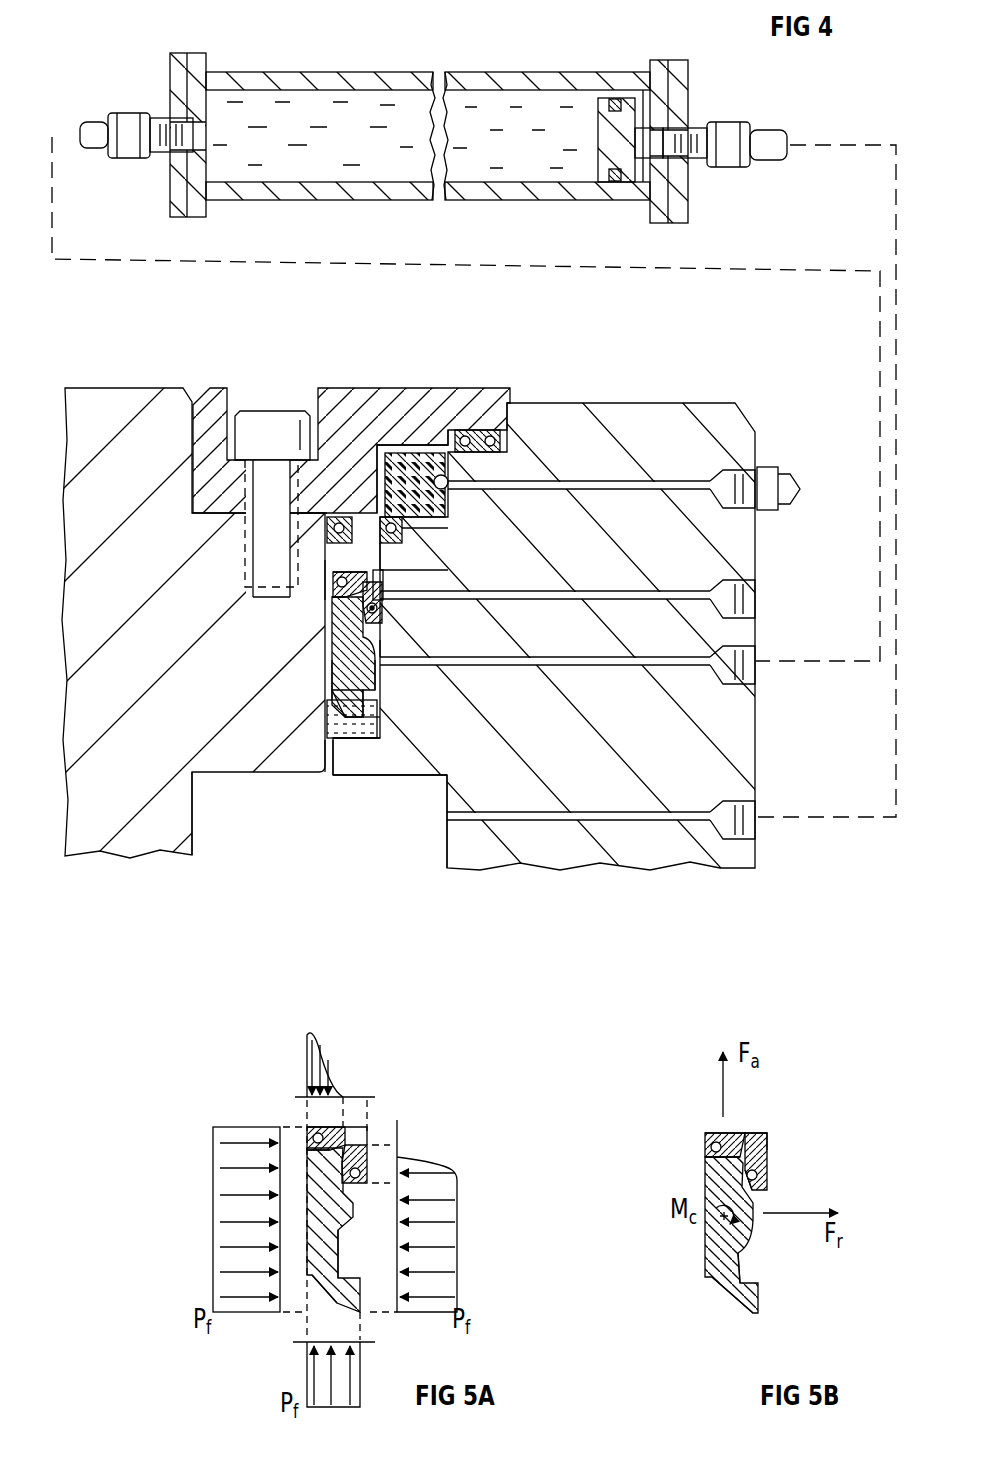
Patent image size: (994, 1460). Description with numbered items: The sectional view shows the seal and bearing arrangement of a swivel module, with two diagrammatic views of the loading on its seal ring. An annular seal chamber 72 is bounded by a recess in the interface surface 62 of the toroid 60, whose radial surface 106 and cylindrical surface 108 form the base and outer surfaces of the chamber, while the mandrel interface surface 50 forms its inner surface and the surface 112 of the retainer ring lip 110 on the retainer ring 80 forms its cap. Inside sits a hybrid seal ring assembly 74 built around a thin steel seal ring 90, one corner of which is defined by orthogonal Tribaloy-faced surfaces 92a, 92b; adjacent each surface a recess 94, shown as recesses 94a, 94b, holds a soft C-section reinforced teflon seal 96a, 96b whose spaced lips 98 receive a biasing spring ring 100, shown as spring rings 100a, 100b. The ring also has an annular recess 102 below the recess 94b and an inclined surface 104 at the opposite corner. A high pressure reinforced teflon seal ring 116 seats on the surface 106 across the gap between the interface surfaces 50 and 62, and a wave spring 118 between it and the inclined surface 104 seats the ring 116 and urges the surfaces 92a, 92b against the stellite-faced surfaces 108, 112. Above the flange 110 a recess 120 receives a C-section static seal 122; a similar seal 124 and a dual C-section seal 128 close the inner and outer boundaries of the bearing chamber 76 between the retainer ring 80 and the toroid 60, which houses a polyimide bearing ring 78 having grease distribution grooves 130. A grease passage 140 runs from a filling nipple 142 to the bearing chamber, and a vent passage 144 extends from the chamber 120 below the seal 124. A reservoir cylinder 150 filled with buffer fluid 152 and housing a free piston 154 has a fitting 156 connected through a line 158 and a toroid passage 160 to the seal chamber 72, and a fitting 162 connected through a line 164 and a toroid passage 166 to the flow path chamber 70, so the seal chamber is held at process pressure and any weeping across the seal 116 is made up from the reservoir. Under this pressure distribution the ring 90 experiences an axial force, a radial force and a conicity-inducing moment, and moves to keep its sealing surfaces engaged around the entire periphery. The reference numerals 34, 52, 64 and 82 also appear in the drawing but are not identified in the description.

In FIG. 4, the housing body 34 is at (90, 395).
In FIG. 4, the mandrel interface surface 50 is at (324, 775).
In FIG. 4, the lip 52 is at (200, 830).
In FIG. 4, the toroid 60 is at (726, 410).
In FIG. 4, the interface surface 62 is at (333, 777).
In FIG. 4, the lower block 64 is at (447, 832).
In FIG. 4, the flow path chamber 70 is at (373, 820).
In FIG. 4, the seal chamber 72 is at (330, 628).
In FIG. 4, the hybrid seal ring assembly 74 is at (331, 678).
In FIG. 4, the bearing chamber 76 is at (376, 468).
In FIG. 4, the bearing ring 78 is at (405, 452).
In FIG. 4, the retainer ring 80 is at (346, 395).
In FIG. 4, the bolt 82 is at (262, 425).
In FIG. 4, the seal ring 90 is at (346, 652).
In FIG. 5A, the seal ring 90 is at (312, 1198).
In FIG. 5B, the seal ring 90 is at (712, 1180).
In FIG. 4, the orthogonal surface 92a is at (360, 572).
In FIG. 5A, the orthogonal surface 92a is at (350, 1127).
In FIG. 5B, the orthogonal surface 92a is at (755, 1133).
In FIG. 4, the orthogonal surface 92b is at (385, 578).
In FIG. 5A, the orthogonal surface 92b is at (367, 1130).
In FIG. 5B, the orthogonal surface 92b is at (767, 1137).
In FIG. 4, the recess 94 is at (370, 594).
In FIG. 5A, the recess 94 is at (333, 1128).
In FIG. 5B, the recess 94a is at (733, 1133).
In FIG. 5B, the recess 94b is at (767, 1153).
In FIG. 4, the C-section seal 96a is at (330, 613).
In FIG. 5A, the C-section seal 96a is at (312, 1147).
In FIG. 5B, the C-section seal 96a is at (722, 1135).
In FIG. 4, the C-section seal 96b is at (380, 606).
In FIG. 5A, the C-section seal 96b is at (368, 1165).
In FIG. 5B, the C-section seal 96b is at (767, 1168).
In FIG. 4, the lips 98 is at (378, 614).
In FIG. 5B, the lips 98 is at (712, 1143).
In FIG. 4, the biasing spring ring 100 is at (374, 612).
In FIG. 5B, the biasing spring ring 100 is at (710, 1146).
In FIG. 5A, the biasing spring ring 100a is at (312, 1135).
In FIG. 5A, the biasing spring ring 100b is at (357, 1180).
In FIG. 4, the annular recess 102 is at (368, 680).
In FIG. 5A, the annular recess 102 is at (340, 1250).
In FIG. 5B, the annular recess 102 is at (745, 1250).
In FIG. 4, the inclined surface 104 is at (378, 717).
In FIG. 5A, the inclined surface 104 is at (337, 1303).
In FIG. 5B, the inclined surface 104 is at (735, 1300).
In FIG. 4, the radial surface 106 is at (368, 744).
In FIG. 4, the cylindrical surface 108 is at (386, 640).
In FIG. 4, the retainer ring lip 110 is at (330, 552).
In FIG. 4, the retainer ring flange surface 112 is at (332, 572).
In FIG. 4, the high pressure seal ring 116 is at (330, 730).
In FIG. 4, the wave spring 118 is at (340, 700).
In FIG. 4, the recess 120 is at (405, 552).
In FIG. 4, the C-section static seal 122 is at (326, 530).
In FIG. 4, the C-section seal 124 is at (405, 530).
In FIG. 4, the dual C-section seal 128 is at (480, 432).
In FIG. 4, the grooves 130 is at (450, 480).
In FIG. 4, the grease passage 140 is at (640, 492).
In FIG. 4, the nipple 142 is at (770, 472).
In FIG. 4, the vent passage 144 is at (615, 590).
In FIG. 4, the reservoir cylinder 150 is at (303, 78).
In FIG. 4, the buffer fluid 152 is at (332, 170).
In FIG. 4, the free piston 154 is at (600, 175).
In FIG. 4, the reservoir fitting 156 is at (125, 114).
In FIG. 4, the line 158 is at (820, 270).
In FIG. 4, the toroid passage 160 is at (632, 667).
In FIG. 4, the reservoir cylinder fitting 162 is at (732, 122).
In FIG. 4, the line 164 is at (860, 140).
In FIG. 4, the toroid passage 166 is at (620, 802).